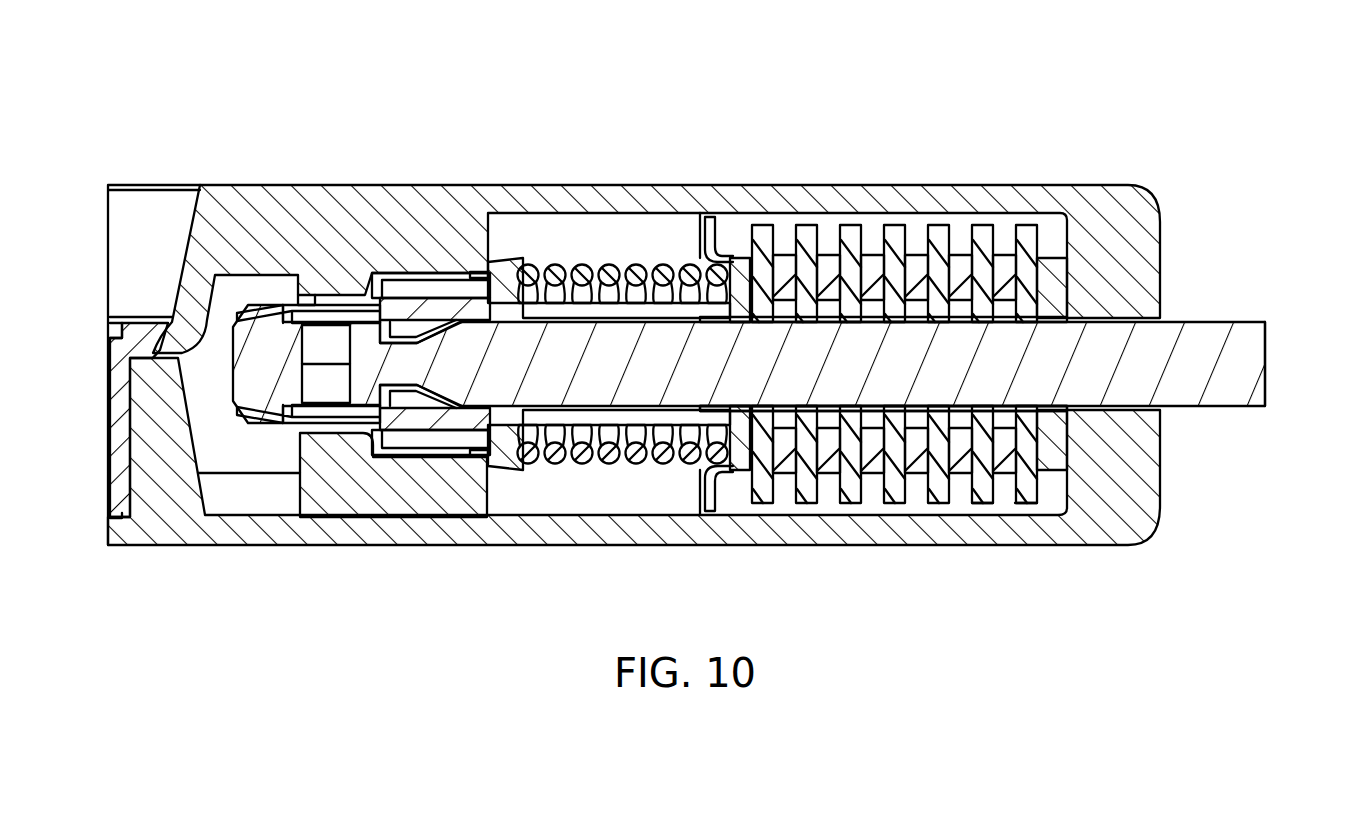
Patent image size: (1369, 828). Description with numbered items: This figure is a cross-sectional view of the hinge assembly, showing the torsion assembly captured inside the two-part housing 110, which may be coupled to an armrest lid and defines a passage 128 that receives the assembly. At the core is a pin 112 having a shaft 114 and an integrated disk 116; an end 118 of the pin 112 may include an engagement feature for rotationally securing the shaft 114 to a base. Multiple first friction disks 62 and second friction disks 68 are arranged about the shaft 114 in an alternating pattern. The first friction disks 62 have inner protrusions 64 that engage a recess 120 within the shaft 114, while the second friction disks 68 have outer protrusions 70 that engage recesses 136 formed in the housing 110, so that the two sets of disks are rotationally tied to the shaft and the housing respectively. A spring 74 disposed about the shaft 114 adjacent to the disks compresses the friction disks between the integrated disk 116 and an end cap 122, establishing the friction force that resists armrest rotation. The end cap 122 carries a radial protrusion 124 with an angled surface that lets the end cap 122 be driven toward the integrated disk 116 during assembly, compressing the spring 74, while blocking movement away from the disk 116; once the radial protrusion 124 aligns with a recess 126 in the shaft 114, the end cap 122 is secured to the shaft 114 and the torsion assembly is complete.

The two-part housing 110 is at (633, 168).
The pin 112 is at (1107, 373).
The shaft 114 is at (548, 320).
The integrated disk 116 is at (1050, 262).
The end 118 is at (1267, 362).
The recess 120 is at (828, 318).
The end cap 122 is at (495, 276).
The radial protrusion 124 is at (412, 332).
The recess 126 is at (422, 404).
The passage 128 is at (597, 243).
The first friction disks 62 is at (785, 268).
The inner protrusions 64 is at (960, 432).
The second friction disks 68 is at (1023, 230).
The outer protrusions 70 is at (1027, 510).
The spring 74 is at (580, 270).
The recesses 136 is at (845, 508).